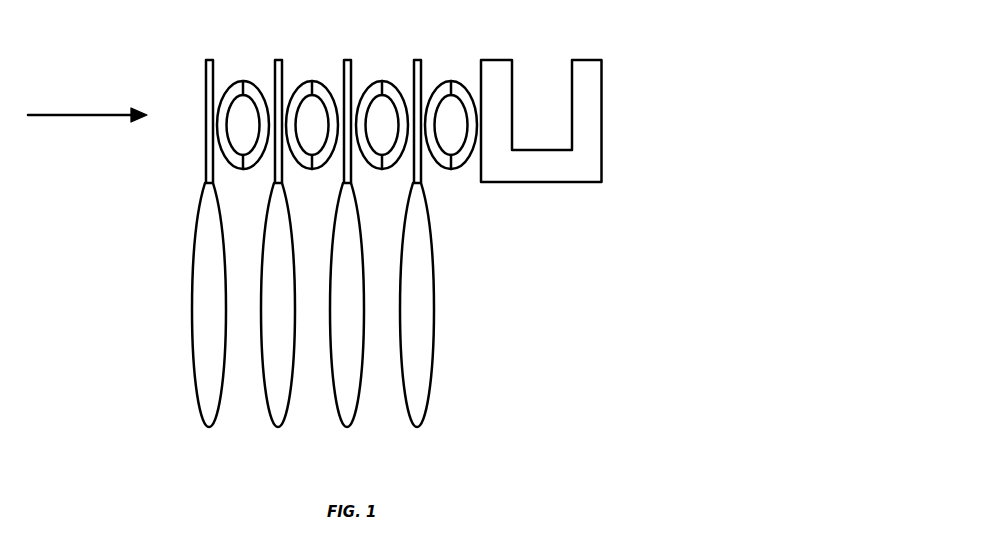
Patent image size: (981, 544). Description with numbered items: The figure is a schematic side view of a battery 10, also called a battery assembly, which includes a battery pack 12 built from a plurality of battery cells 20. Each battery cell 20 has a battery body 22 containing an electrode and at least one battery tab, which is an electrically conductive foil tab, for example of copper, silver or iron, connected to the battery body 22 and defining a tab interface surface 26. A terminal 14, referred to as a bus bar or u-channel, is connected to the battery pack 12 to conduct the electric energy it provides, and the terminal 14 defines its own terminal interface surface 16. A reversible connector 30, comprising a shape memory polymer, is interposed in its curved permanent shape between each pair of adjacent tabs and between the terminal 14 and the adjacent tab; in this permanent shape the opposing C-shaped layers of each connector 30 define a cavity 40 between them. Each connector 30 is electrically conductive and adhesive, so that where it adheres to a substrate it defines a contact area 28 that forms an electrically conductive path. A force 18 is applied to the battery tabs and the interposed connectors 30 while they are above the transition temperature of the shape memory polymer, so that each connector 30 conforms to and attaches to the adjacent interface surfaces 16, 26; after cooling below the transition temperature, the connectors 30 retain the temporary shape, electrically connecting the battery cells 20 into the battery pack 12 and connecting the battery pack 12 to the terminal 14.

The battery 10 is at (600, 29).
The battery pack 12 is at (170, 47).
The terminal 14 is at (603, 146).
The interface surface 16 is at (473, 70).
The force 18 is at (47, 118).
The battery cell 20 is at (223, 424).
The battery body 22 is at (193, 255).
The interface surface 26 is at (225, 67).
The contact area 28 is at (219, 125).
The reversible connector 30 is at (243, 80).
The cavity 40 is at (252, 133).